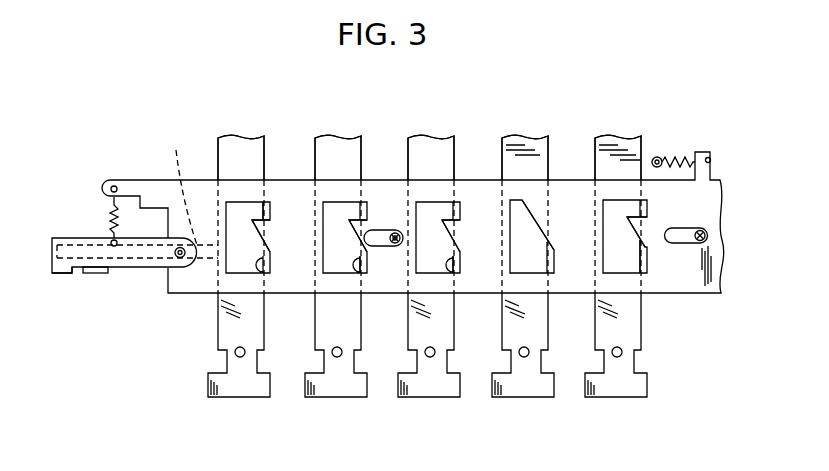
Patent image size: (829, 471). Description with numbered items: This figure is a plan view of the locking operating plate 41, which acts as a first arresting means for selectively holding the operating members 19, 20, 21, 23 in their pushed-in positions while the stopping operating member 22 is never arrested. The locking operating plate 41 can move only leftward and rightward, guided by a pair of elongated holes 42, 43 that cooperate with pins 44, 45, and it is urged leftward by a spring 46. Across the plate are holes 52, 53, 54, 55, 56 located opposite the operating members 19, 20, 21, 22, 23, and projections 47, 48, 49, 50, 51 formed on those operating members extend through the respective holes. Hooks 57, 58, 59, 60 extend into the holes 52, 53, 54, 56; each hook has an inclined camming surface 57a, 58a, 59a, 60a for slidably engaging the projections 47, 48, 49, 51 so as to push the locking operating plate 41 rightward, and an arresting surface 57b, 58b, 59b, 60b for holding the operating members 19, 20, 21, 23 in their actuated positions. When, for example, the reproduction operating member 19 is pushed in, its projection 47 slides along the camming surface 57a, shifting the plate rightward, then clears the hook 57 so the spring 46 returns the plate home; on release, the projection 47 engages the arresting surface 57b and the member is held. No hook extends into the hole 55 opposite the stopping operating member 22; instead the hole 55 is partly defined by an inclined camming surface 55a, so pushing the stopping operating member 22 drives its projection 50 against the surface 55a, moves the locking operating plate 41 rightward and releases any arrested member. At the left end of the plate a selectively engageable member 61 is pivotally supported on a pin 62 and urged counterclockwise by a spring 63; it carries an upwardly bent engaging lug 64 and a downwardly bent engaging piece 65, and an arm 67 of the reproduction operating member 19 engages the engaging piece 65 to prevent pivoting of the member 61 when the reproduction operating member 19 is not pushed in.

The reproduction operating member 19 is at (220, 331).
The operating member 20 is at (314, 332).
The operating member 21 is at (408, 331).
The stopping operating member 22 is at (502, 330).
The operating member 23 is at (596, 331).
The locking operating plate 41 is at (716, 205).
The elongated hole 42 is at (386, 246).
The elongated hole 43 is at (684, 242).
The pin 44 is at (395, 232).
The pin 45 is at (706, 236).
The spring 46 is at (677, 158).
The projection 47 is at (265, 264).
The projection 48 is at (358, 262).
The projection 49 is at (460, 270).
The projection 50 is at (547, 269).
The projection 51 is at (641, 273).
The hole 52 is at (240, 215).
The hole 53 is at (334, 214).
The hole 54 is at (426, 216).
The hole 55 is at (513, 220).
The inclined camming surface 55a is at (530, 222).
The hole 56 is at (608, 216).
The hook 57 is at (290, 218).
The inclined camming surface 57a is at (222, 219).
The arresting surface 57b is at (254, 221).
The hook 58 is at (368, 218).
The inclined camming surface 58a is at (367, 222).
The arresting surface 58b is at (352, 221).
The hook 59 is at (453, 234).
The inclined camming surface 59a is at (452, 232).
The arresting surface 59b is at (446, 220).
The hook 60 is at (640, 226).
The inclined camming surface 60a is at (645, 220).
The arresting surface 60b is at (640, 245).
The selectively engageable member 61 is at (138, 268).
The pin 62 is at (180, 260).
The spring 63 is at (112, 212).
The engaging lug 64 is at (100, 274).
The engaging piece 65 is at (62, 276).
The arm 67 is at (178, 182).